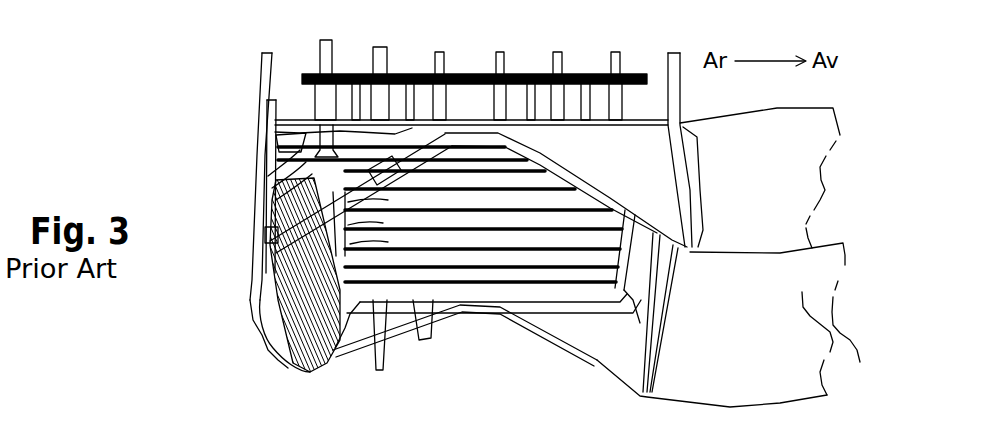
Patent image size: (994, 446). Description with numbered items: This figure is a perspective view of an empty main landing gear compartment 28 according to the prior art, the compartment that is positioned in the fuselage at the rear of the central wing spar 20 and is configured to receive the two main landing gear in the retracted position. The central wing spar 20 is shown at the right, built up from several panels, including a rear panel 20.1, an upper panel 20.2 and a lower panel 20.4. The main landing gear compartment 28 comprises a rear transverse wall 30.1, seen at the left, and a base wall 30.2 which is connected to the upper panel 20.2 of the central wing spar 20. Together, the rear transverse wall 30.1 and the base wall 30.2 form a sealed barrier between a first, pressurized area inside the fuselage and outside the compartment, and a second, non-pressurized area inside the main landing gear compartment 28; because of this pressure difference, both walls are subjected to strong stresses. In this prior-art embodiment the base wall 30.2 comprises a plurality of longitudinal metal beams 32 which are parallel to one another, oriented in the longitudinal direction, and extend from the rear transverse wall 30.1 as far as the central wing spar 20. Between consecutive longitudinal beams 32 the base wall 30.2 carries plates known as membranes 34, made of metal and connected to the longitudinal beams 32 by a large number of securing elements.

The central wing spar 20 is at (755, 390).
The rear panel 20.1 is at (652, 324).
The upper panel 20.2 is at (777, 108).
The lower panel 20.4 is at (789, 319).
The main landing gear compartment 28 is at (470, 358).
The rear transverse wall 30.1 is at (262, 303).
The base wall 30.2 is at (516, 178).
The longitudinal metal beams 32 is at (483, 210).
The membranes 34 is at (295, 196).